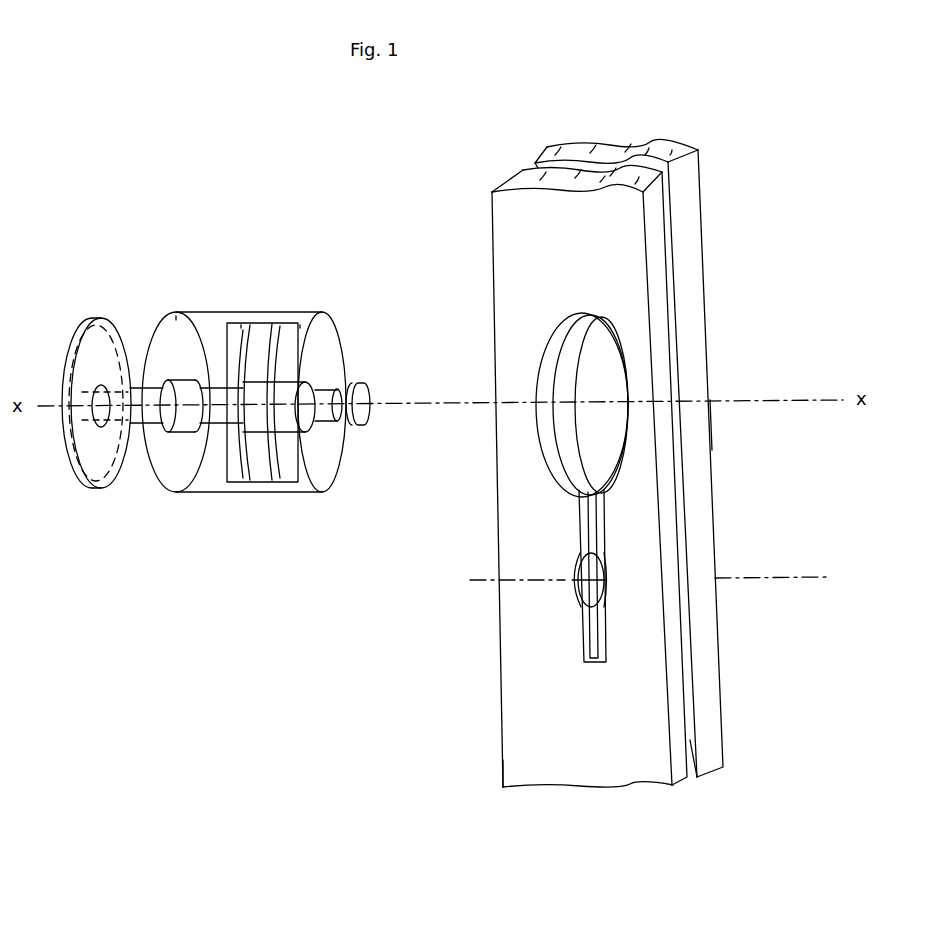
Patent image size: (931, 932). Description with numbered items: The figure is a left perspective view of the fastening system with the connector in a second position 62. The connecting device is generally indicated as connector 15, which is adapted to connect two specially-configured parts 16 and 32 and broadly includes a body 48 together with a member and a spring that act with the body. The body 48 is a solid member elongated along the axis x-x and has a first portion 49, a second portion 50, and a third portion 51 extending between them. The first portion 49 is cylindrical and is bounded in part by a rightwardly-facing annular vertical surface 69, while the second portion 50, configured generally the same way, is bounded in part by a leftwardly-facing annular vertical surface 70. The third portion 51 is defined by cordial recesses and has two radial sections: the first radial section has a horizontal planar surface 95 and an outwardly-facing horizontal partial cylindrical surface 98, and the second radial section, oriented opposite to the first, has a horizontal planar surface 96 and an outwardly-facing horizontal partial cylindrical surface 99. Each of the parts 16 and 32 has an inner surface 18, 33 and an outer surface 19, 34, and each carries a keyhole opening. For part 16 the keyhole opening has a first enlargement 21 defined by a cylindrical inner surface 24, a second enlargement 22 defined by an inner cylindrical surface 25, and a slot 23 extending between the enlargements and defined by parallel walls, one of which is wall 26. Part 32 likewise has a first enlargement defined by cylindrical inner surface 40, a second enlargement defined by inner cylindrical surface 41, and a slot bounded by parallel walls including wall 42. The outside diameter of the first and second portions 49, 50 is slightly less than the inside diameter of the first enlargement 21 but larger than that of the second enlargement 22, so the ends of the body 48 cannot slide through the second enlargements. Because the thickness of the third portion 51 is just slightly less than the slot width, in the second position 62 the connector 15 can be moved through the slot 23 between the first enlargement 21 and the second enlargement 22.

The connector 15 is at (150, 185).
The part 16 is at (470, 183).
The inner surface 18 is at (698, 778).
The outer surface 19 is at (572, 765).
The first enlargement 21 is at (528, 358).
The second enlargement 22 is at (550, 600).
The slot 23 is at (543, 532).
The cylindrical inner surface 24 is at (547, 444).
The inner cylindrical surface 25 is at (578, 606).
The parallel wall 26 is at (582, 515).
The part 32 is at (710, 146).
The inner surface 33 is at (698, 672).
The outer surface 34 is at (723, 707).
The cylindrical inner surface 40 is at (581, 438).
The inner cylindrical surface 41 is at (595, 568).
The parallel wall 42 is at (597, 531).
The body 48 is at (345, 330).
The first portion 49 is at (186, 310).
The second portion 50 is at (300, 320).
The third portion 51 is at (241, 320).
The second position 62 is at (104, 498).
The rightwardly-facing annular vertical surface 69 is at (162, 465).
The leftwardly-facing annular vertical surface 70 is at (345, 462).
The horizontal planar surface 95 is at (272, 340).
The horizontal planar surface 96 is at (277, 483).
The outwardly-facing horizontal partial cylindrical surface 98 is at (240, 340).
The outwardly-facing horizontal partial cylindrical surface 99 is at (255, 482).